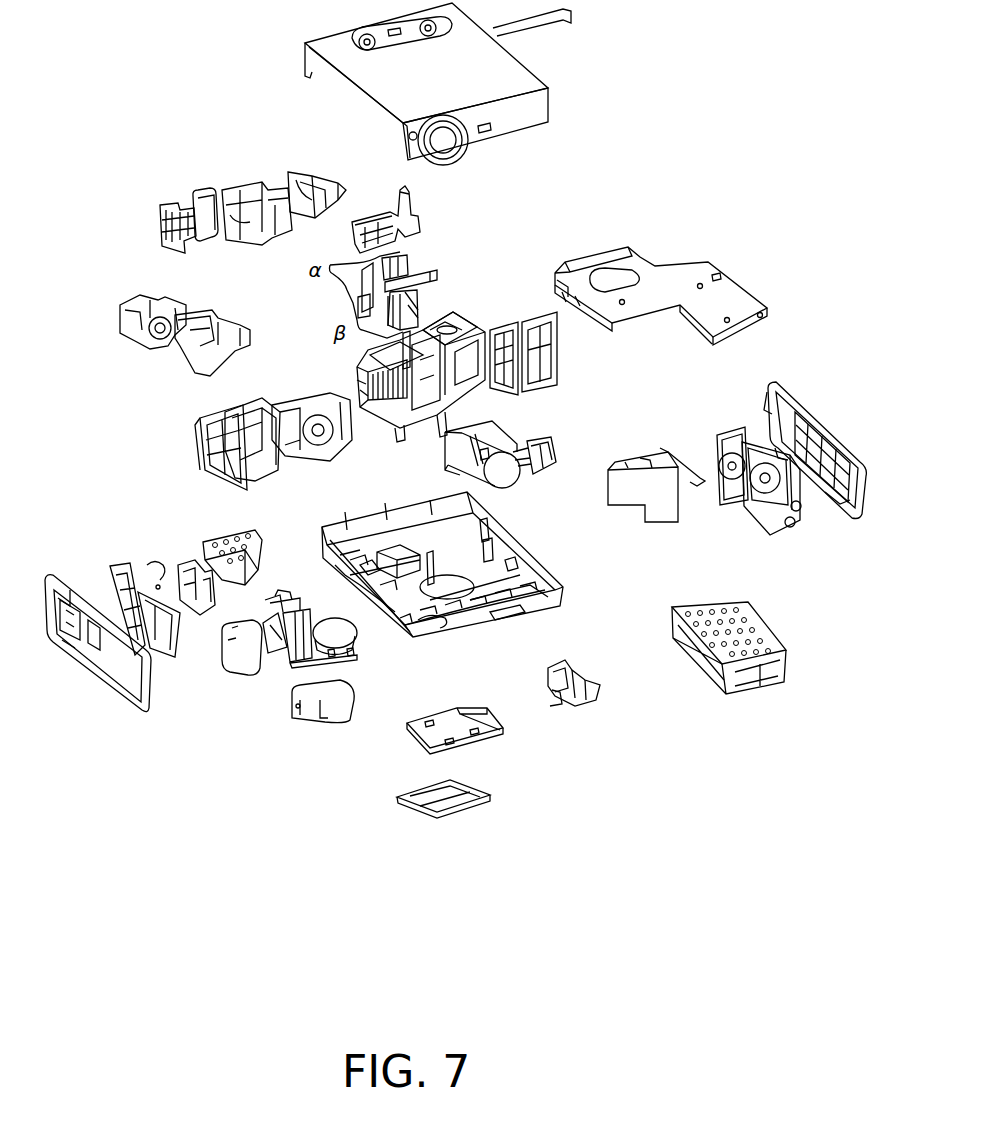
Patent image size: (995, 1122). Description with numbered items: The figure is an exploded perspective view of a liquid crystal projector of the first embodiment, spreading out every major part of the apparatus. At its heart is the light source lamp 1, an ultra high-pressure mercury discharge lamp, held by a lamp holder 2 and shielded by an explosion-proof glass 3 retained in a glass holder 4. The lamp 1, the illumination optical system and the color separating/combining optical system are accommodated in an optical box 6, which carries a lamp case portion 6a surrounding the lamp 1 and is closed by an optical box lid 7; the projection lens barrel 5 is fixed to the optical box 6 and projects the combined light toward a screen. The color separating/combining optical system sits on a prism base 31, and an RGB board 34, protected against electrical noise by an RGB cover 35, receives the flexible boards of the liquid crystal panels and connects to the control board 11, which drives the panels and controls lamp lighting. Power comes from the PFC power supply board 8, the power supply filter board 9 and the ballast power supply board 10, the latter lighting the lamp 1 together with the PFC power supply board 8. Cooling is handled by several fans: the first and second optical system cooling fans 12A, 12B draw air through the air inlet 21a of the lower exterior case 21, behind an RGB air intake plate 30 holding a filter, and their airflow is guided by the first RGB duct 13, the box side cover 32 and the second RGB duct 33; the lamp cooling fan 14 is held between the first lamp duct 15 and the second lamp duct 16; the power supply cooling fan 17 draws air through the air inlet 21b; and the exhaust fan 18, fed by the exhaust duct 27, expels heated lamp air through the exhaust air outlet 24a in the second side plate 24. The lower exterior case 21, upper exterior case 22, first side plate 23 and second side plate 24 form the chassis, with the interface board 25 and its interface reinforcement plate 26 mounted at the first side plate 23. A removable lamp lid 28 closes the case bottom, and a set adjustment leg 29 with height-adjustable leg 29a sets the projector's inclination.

The light source lamp 1 is at (300, 170).
The lamp holder 2 is at (243, 181).
The explosion-proof glass 3 is at (194, 193).
The glass holder 4 is at (165, 201).
The projection lens barrel 5 is at (446, 442).
The optical box 6 is at (426, 376).
The lamp case portion 6a is at (460, 330).
The optical box lid 7 is at (413, 213).
The PFC power supply board 8 is at (721, 633).
The power supply filter board 9 is at (212, 535).
The ballast power supply board 10 is at (697, 668).
The control board 11 is at (705, 268).
The first optical system cooling fan 12A is at (240, 670).
The second optical system cooling fan 12B is at (298, 715).
The first RGB duct 13 is at (297, 610).
The lamp cooling fan 14 is at (150, 358).
The first lamp duct 15 is at (205, 366).
The second lamp duct 16 is at (142, 331).
The power supply cooling fan 17 is at (745, 511).
The exhaust fan 18 is at (716, 497).
The lower exterior case 21 is at (449, 579).
The air inlet 21a is at (440, 622).
The air inlet 21b is at (500, 613).
The upper exterior case 22 is at (540, 95).
The first side plate 23 is at (118, 686).
The second side plate 24 is at (815, 458).
The exhaust air outlet 24a is at (835, 498).
The interface board 25 is at (205, 620).
The interface reinforcement plate 26 is at (162, 658).
The exhaust duct 27 is at (620, 515).
The lamp lid 28 is at (492, 736).
The set adjustment leg 29 is at (579, 695).
The leg 29a is at (548, 705).
The RGB air intake plate 30 is at (483, 800).
The prism base 31 is at (290, 462).
The box side cover 32 is at (264, 476).
The second RGB duct 33 is at (200, 456).
The RGB board 34 is at (540, 384).
The RGB cover 35 is at (505, 389).